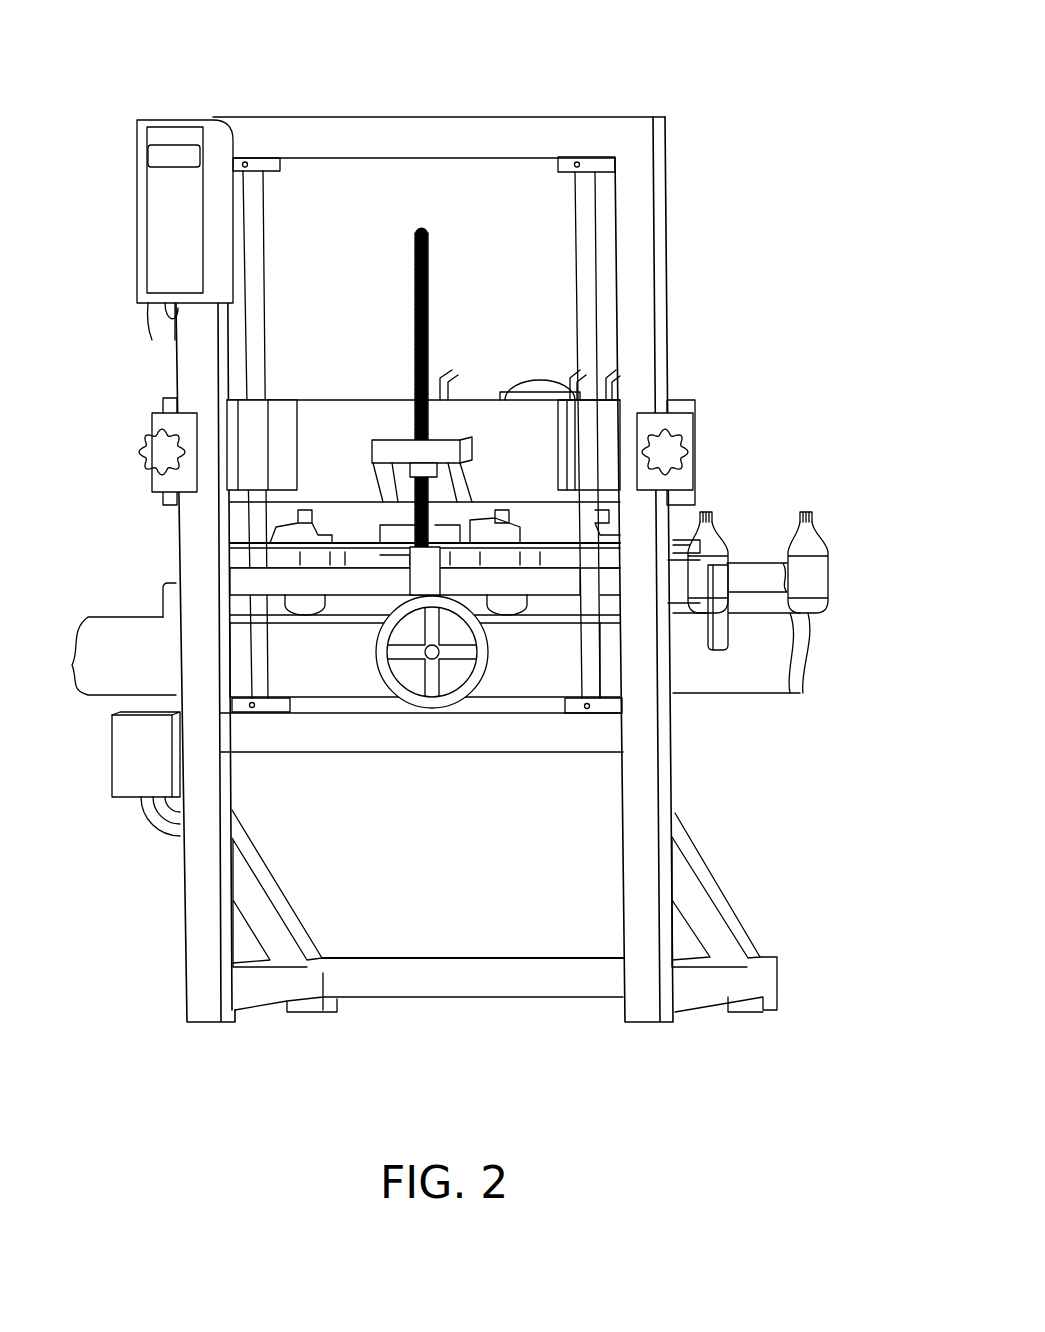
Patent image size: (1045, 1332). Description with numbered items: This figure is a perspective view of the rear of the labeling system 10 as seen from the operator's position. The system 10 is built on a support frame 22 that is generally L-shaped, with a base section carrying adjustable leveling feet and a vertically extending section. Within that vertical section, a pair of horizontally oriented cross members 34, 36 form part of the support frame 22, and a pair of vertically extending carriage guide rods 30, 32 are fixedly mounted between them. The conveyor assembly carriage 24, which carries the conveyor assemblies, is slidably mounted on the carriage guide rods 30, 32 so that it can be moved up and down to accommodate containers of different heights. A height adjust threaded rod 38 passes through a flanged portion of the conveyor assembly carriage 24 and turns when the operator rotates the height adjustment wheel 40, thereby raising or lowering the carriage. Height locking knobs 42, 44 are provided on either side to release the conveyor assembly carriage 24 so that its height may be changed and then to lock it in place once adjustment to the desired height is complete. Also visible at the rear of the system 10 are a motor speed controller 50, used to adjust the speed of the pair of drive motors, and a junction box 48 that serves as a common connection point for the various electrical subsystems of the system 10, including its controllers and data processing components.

The system 10 is at (567, 92).
The support frame 22 is at (668, 232).
The conveyor assembly carriage 24 is at (440, 455).
The carriage guide rod 30 is at (587, 252).
The carriage guide rod 32 is at (257, 283).
The cross member 34 is at (383, 140).
The cross member 36 is at (277, 740).
The height adjust threaded rod 38 is at (428, 290).
The height adjustment wheel 40 is at (462, 692).
The height locking knob 42 is at (663, 455).
The height locking knob 44 is at (155, 455).
The junction box 48 is at (147, 767).
The motor speed controller 50 is at (172, 190).